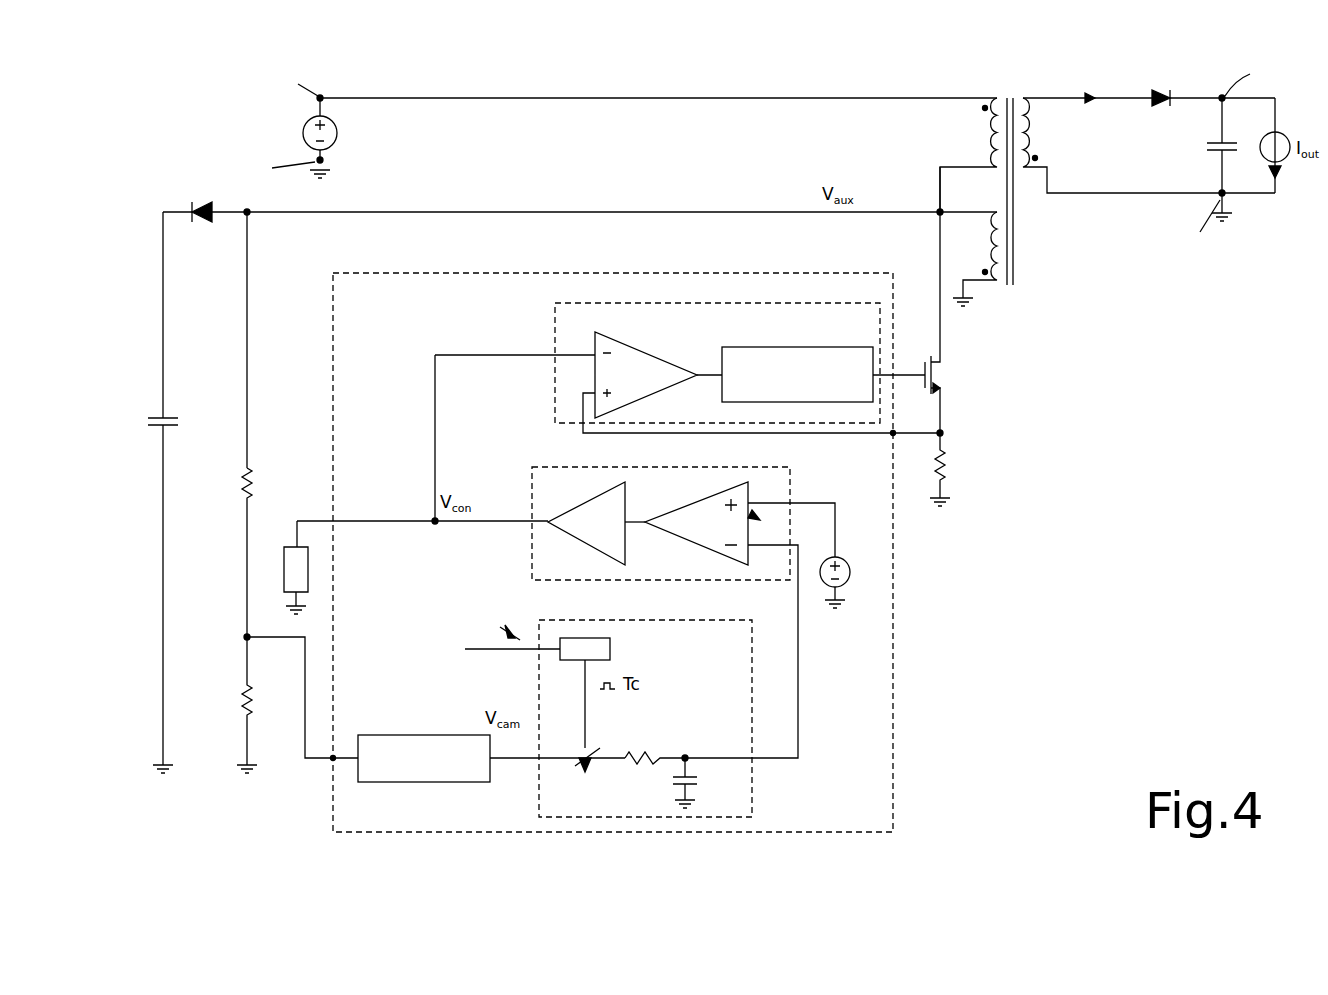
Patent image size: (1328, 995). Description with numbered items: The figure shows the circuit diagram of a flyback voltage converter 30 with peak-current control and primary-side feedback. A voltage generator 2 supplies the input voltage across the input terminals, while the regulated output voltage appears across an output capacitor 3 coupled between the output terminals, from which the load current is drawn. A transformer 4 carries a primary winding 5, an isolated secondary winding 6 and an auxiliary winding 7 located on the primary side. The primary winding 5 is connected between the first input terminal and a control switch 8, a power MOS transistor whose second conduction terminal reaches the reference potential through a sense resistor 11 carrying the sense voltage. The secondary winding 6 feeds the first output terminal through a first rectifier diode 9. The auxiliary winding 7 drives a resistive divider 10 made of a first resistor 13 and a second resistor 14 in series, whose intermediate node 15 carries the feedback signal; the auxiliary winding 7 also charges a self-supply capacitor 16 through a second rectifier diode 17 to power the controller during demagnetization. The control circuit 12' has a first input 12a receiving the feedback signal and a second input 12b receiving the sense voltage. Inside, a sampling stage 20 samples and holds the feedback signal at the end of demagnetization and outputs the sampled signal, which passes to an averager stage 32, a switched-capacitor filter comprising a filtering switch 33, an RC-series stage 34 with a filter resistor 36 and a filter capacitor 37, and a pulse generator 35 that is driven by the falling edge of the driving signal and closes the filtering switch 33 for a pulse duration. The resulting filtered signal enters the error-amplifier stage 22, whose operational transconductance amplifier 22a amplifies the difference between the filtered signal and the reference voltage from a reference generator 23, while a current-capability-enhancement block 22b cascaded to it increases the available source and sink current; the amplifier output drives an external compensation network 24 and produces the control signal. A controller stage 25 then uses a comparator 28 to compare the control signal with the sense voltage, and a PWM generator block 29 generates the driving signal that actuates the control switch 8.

The voltage generator 2 is at (338, 134).
The output capacitor 3 is at (1215, 150).
The transformer 4 is at (1026, 85).
The primary winding 5 is at (990, 142).
The secondary winding 6 is at (1030, 125).
The auxiliary winding 7 is at (990, 257).
The control switch 8 is at (948, 368).
The first rectifier diode 9 is at (1154, 88).
The resistive divider 10 is at (262, 466).
The sense resistor 11 is at (948, 470).
The first input 12a is at (330, 762).
The second input 12b is at (900, 437).
The control circuit 12' is at (673, 552).
The first resistor 13 is at (238, 486).
The second resistor 14 is at (238, 700).
The intermediate node 15 is at (243, 634).
The self-supply capacitor 16 is at (170, 416).
The second rectifier diode 17 is at (203, 200).
The sampling stage 20 is at (422, 744).
The error-amplifier stage 22 is at (522, 562).
The operational transconductance amplifier 22a is at (715, 541).
The current-capability-enhancement block 22b is at (597, 541).
The reference generator 23 is at (840, 590).
The external compensation network 24 is at (293, 568).
The controller stage 25 is at (540, 414).
The comparator 28 is at (641, 357).
The PWM generator block 29 is at (806, 362).
The voltage converter 30 is at (1125, 512).
The averager stage 32 is at (767, 798).
The filtering switch 33 is at (583, 750).
The RC-series stage 34 is at (697, 740).
The pulse generator 35 is at (610, 652).
The filter resistor 36 is at (658, 752).
The filter capacitor 37 is at (680, 789).